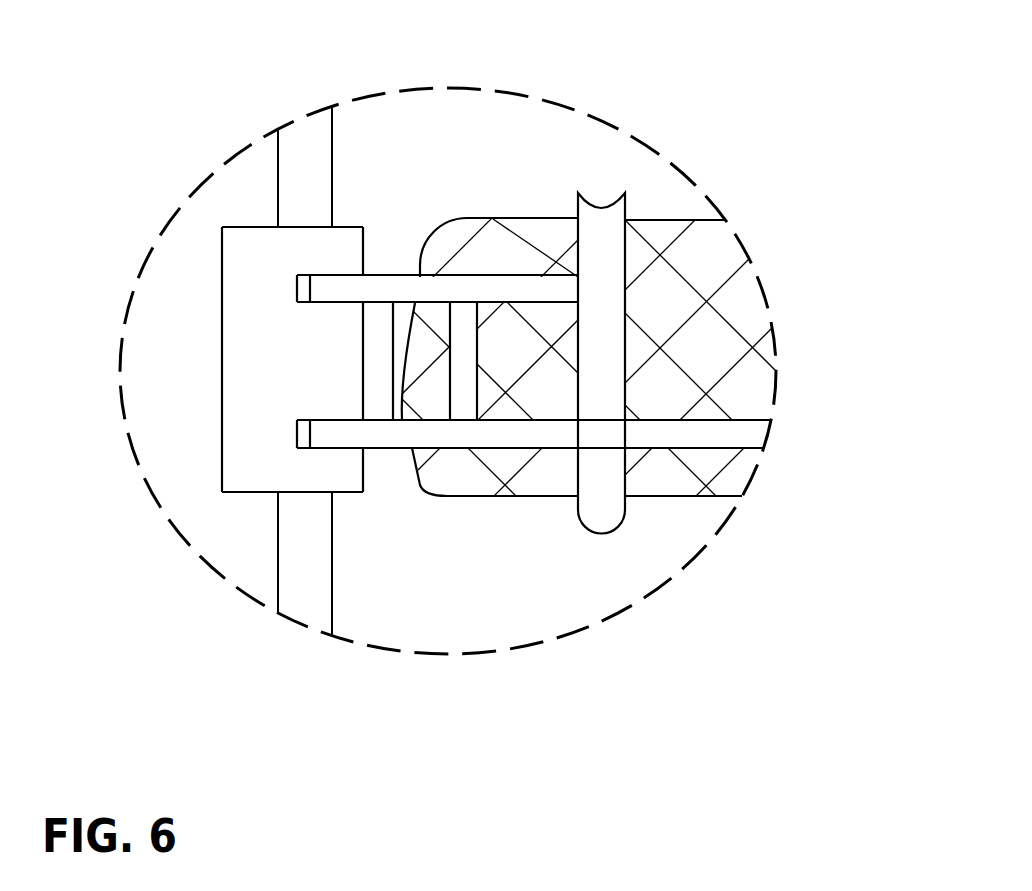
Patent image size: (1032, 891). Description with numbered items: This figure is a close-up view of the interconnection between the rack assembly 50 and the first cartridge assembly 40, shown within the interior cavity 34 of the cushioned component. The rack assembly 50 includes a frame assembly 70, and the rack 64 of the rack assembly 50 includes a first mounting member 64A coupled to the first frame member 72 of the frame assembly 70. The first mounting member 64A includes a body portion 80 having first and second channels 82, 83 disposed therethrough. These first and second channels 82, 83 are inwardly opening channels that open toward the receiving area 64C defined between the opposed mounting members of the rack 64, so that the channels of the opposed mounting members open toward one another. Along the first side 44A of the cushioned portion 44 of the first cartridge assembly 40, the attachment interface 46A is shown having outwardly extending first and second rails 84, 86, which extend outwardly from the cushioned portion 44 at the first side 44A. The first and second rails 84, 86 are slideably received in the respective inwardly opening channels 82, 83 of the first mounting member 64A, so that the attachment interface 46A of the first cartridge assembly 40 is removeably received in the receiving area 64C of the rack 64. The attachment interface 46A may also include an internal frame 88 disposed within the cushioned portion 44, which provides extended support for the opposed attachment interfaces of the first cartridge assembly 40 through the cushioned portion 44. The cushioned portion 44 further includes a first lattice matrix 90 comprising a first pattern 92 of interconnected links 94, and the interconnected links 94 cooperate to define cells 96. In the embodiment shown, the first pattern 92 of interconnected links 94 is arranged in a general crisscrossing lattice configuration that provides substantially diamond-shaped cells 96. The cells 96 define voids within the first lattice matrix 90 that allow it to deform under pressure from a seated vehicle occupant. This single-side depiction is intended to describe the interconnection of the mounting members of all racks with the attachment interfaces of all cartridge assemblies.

The interior cavity 34 is at (566, 163).
The first cartridge assembly 40 is at (765, 346).
The cushioned portion 44 is at (496, 319).
The first side 44A is at (482, 218).
The attachment interface 46A is at (391, 264).
The rack assembly 50 is at (235, 528).
The rack 64 is at (333, 370).
The first mounting member 64A is at (220, 470).
The receiving area 64C is at (700, 357).
The frame assembly 70 is at (256, 348).
The first frame member 72 is at (300, 180).
The body portion 80 is at (203, 391).
The first channel 82 is at (303, 288).
The second channel 83 is at (300, 434).
The first rail 84 is at (317, 151).
The second rail 86 is at (333, 580).
The internal frame 88 is at (525, 435).
The first lattice matrix 90 is at (712, 272).
The first pattern 92 is at (763, 325).
The interconnected links 94 is at (743, 463).
The cells 96 is at (692, 473).